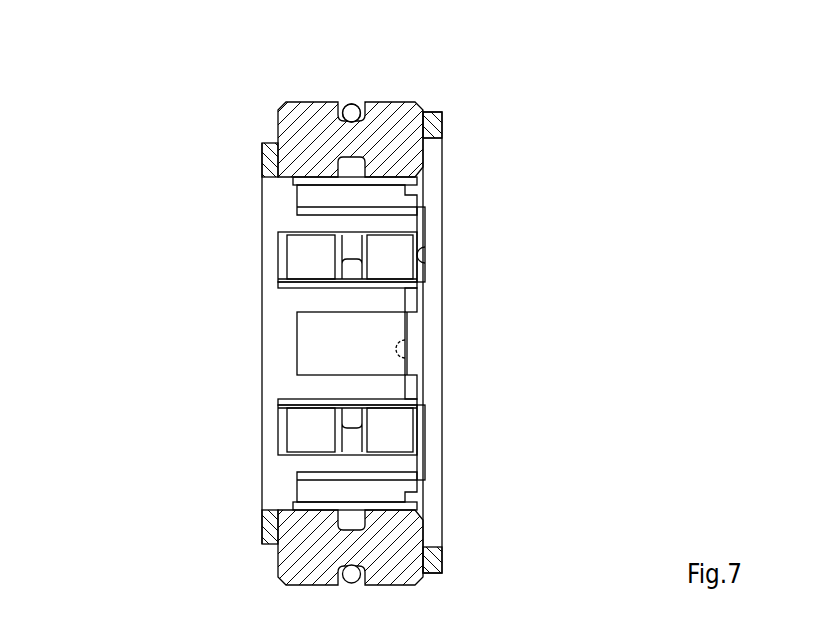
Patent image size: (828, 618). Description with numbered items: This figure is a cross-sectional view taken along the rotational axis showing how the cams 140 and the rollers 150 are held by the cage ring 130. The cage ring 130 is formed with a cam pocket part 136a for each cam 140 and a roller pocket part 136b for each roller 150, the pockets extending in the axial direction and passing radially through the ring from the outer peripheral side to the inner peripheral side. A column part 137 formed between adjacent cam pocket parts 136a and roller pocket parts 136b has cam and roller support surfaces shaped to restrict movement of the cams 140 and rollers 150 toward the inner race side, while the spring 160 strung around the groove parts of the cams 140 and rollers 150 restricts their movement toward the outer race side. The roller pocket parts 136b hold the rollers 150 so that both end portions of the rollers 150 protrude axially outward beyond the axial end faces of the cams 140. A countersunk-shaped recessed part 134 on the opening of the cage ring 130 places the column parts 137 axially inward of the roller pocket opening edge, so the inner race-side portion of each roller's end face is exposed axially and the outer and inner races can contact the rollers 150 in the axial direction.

The cage ring 130 is at (444, 520).
The recessed part 134 is at (444, 150).
The cam pocket part 136a is at (400, 352).
The roller pocket part 136b is at (422, 267).
The column part 137 is at (425, 214).
The cam 140 is at (300, 197).
The roller 150 is at (290, 124).
The spring 160 is at (352, 106).